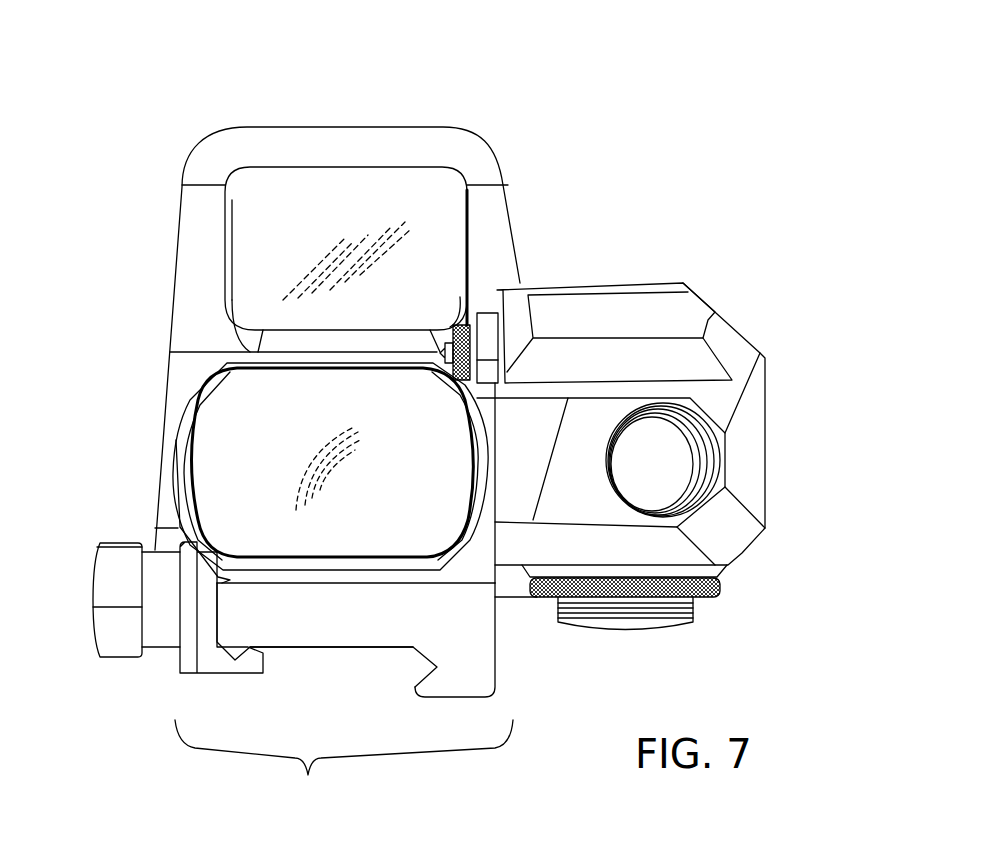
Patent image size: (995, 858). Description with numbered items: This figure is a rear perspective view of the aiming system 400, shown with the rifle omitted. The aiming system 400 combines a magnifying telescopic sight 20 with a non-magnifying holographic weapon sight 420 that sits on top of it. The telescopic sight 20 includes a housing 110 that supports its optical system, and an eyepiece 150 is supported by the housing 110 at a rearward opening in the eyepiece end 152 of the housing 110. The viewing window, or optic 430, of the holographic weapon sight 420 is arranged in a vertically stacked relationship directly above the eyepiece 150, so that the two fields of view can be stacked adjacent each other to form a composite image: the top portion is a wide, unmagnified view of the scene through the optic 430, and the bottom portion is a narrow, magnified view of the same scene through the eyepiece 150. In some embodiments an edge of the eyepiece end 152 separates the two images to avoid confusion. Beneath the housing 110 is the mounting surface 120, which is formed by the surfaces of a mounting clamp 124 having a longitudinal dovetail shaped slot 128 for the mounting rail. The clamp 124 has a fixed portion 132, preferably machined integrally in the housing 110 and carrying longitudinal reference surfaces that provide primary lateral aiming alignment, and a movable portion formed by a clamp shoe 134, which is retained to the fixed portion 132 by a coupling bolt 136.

The aiming system 400 is at (613, 78).
The holographic weapon sight 420 is at (202, 208).
The optic 430 is at (388, 190).
The eyepiece end 152 is at (232, 353).
The eyepiece 150 is at (188, 450).
The telescopic sight 20 is at (685, 310).
The housing 110 is at (747, 468).
The coupling bolt 136 is at (110, 645).
The clamp shoe 134 is at (180, 660).
The longitudinal dovetail shaped slot 128 is at (302, 664).
The mounting surface 120 is at (428, 663).
The fixed portion 132 is at (478, 670).
The mounting clamp 124 is at (344, 767).